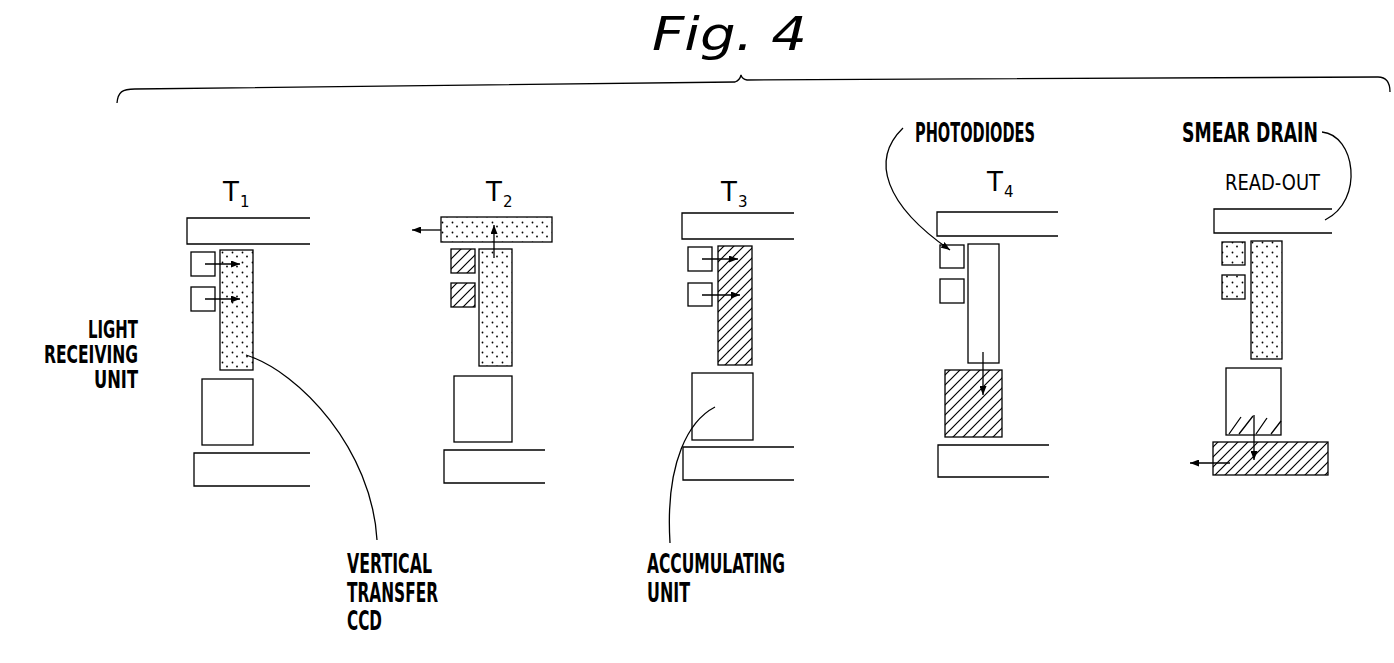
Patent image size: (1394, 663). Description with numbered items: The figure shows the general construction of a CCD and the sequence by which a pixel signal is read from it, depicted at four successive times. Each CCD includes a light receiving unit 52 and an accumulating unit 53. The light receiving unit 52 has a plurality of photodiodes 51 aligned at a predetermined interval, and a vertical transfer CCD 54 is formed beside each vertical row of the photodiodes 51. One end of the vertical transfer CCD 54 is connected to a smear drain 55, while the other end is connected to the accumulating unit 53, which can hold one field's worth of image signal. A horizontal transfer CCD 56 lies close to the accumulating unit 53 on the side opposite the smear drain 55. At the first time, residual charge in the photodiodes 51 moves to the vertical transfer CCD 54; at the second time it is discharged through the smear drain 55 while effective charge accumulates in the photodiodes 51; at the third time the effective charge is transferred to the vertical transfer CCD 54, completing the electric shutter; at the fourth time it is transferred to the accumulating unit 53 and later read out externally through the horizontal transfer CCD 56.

The photodiodes 51 is at (191, 297).
The light receiving unit 52 is at (158, 243).
The accumulating unit 53 is at (245, 413).
The vertical transfer CCD 54 is at (245, 350).
The smear drain 55 is at (290, 238).
The horizontal transfer CCD 56 is at (300, 478).